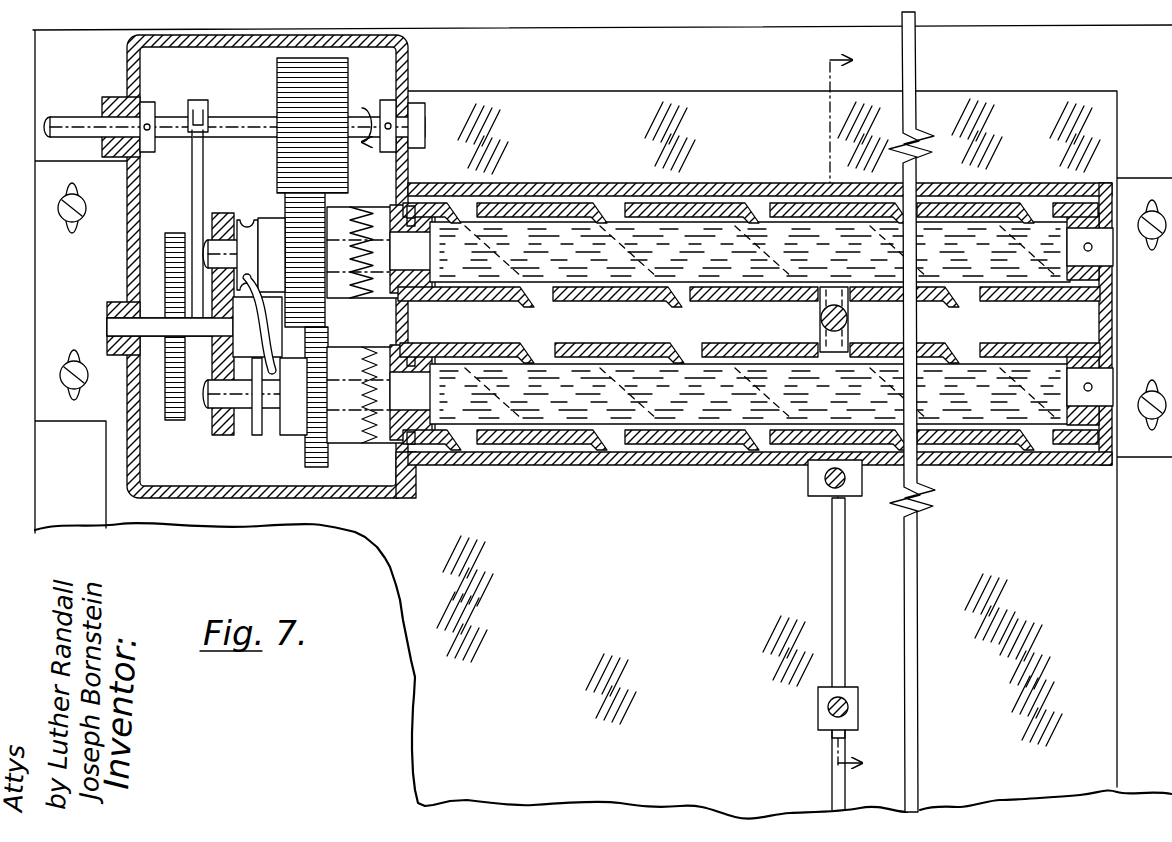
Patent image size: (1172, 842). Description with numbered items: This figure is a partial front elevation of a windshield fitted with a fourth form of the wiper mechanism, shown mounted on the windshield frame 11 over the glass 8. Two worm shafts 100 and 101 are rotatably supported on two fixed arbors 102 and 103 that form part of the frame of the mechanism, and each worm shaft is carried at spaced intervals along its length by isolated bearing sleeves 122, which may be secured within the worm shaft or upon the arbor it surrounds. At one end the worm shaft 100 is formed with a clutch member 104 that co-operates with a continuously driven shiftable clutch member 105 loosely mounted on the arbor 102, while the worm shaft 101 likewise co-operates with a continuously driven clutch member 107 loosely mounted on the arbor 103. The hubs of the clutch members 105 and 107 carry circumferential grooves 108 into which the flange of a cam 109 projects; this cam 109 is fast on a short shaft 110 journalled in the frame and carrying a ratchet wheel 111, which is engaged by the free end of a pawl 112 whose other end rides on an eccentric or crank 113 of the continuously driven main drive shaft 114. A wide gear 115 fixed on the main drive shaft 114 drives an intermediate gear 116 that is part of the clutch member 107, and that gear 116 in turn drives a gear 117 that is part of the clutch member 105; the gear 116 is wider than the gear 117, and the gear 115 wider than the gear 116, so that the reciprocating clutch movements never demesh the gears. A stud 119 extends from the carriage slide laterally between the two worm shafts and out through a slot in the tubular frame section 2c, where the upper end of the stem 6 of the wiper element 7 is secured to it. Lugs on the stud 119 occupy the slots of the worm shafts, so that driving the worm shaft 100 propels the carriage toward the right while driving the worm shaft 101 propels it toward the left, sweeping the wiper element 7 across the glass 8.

The worm shaft 100 is at (710, 432).
The worm shaft 101 is at (700, 205).
The fixed arbor 102 is at (633, 395).
The fixed arbor 103 is at (540, 247).
The clutch member 104 is at (378, 450).
The shiftable clutch member 105 is at (380, 207).
The clutch member 107 is at (271, 218).
The circumferential groove 108 is at (248, 240).
The cam 109 is at (260, 327).
The short shaft 110 is at (107, 322).
The ratchet wheel 111 is at (167, 255).
The pawl 112 is at (197, 177).
The eccentric or crank 113 is at (198, 102).
The main drive shaft 114 is at (233, 125).
The wide gear 115 is at (347, 72).
The intermediate gear 116 is at (308, 222).
The gear 117 is at (318, 465).
The stud 119 is at (820, 318).
The bearing sleeve 122 is at (812, 218).
The tubular frame section 2c is at (1011, 182).
The stem 6 is at (830, 558).
The wiper element 7 is at (833, 784).
The glass 8 is at (603, 425).
The windshield frame 11 is at (1135, 504).